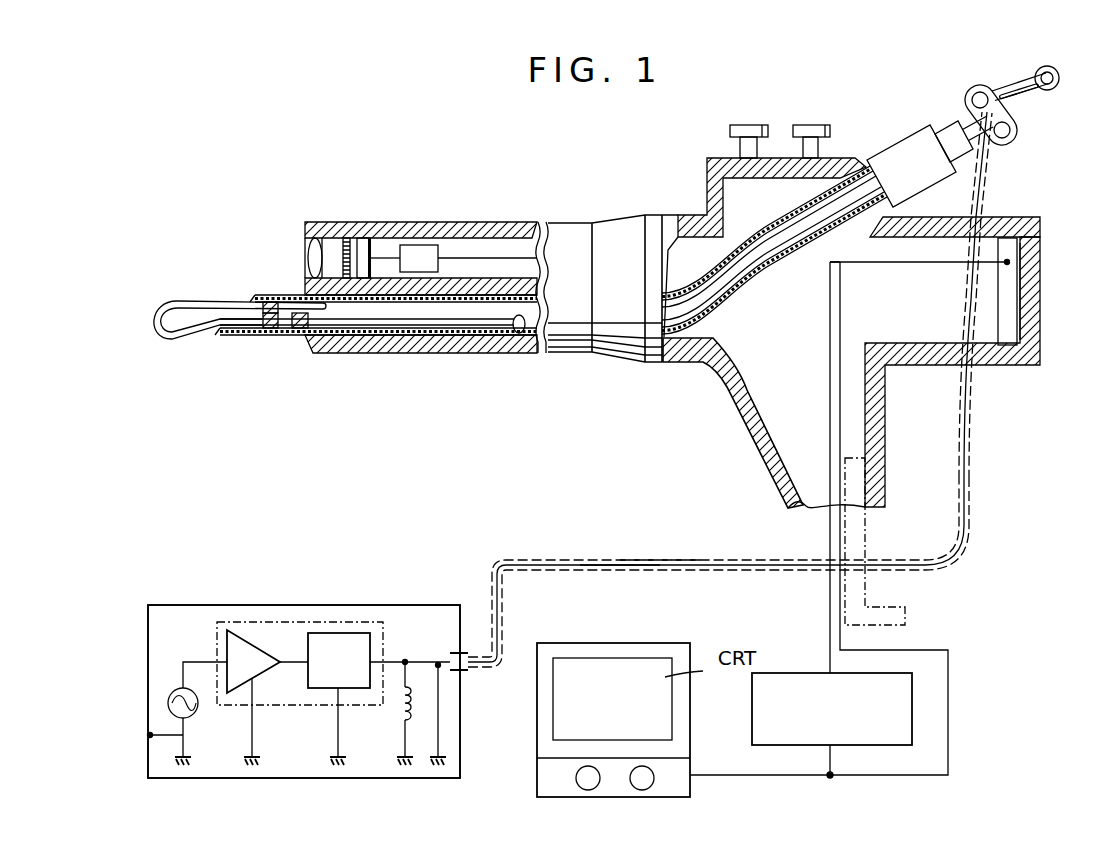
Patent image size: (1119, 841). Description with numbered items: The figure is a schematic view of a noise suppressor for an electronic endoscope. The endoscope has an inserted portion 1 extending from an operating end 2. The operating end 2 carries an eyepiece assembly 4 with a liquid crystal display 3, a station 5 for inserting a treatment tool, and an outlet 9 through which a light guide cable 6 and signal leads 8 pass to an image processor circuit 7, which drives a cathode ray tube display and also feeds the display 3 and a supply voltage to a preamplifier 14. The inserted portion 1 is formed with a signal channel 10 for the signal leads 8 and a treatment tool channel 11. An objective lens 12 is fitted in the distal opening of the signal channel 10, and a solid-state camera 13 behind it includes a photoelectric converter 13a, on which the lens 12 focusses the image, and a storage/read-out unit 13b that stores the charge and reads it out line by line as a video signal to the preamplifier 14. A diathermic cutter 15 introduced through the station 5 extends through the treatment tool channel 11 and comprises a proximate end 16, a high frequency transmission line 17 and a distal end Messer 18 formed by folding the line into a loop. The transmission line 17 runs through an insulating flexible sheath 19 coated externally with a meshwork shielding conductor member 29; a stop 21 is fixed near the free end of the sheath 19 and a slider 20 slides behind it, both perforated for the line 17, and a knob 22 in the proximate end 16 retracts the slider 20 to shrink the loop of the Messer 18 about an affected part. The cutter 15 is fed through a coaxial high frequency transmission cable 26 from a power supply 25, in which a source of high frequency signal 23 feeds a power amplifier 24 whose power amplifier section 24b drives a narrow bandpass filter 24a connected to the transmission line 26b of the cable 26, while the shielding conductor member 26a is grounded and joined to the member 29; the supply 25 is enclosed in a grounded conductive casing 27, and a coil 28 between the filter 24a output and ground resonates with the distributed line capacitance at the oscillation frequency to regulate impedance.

The inserted portion 1 is at (432, 205).
The operating end 2 is at (785, 113).
The display 3 is at (1007, 346).
The eyepiece assembly 4 is at (1008, 222).
The station 5 is at (912, 148).
The light guide cable 6 is at (872, 616).
The image processor circuit 7 is at (752, 702).
The signal leads 8 is at (478, 258).
The outlet 9 is at (770, 460).
The signal channel 10 is at (507, 250).
The treatment tool channel 11 is at (518, 334).
The objective lens 12 is at (310, 260).
The solid-state camera 13 is at (376, 247).
The photoelectric converter 13a is at (343, 250).
The storage/read-out unit 13b is at (360, 245).
The preamplifier 14 is at (432, 250).
The diathermic cutter 15 is at (980, 83).
The proximate end 16 is at (1015, 121).
The high frequency transmission line 17 is at (722, 300).
The distal end Messer 18 is at (230, 333).
The flexible sheath 19 is at (438, 336).
The slider 20 is at (294, 334).
The stop 21 is at (268, 334).
The knob 22 is at (1060, 76).
The source of high frequency signal 23 is at (192, 716).
The power amplifier 24 is at (280, 622).
The narrow bandpass filter 24a is at (347, 640).
The power amplifier section 24b is at (248, 658).
The power supply 25 is at (142, 642).
The high frequency transmission cable 26 is at (567, 558).
The shielding conductor member 26a is at (660, 560).
The transmission line 26b is at (612, 568).
The conductive casing 27 is at (320, 779).
The coil 28 is at (400, 707).
The shielding conductor member 29 is at (393, 326).